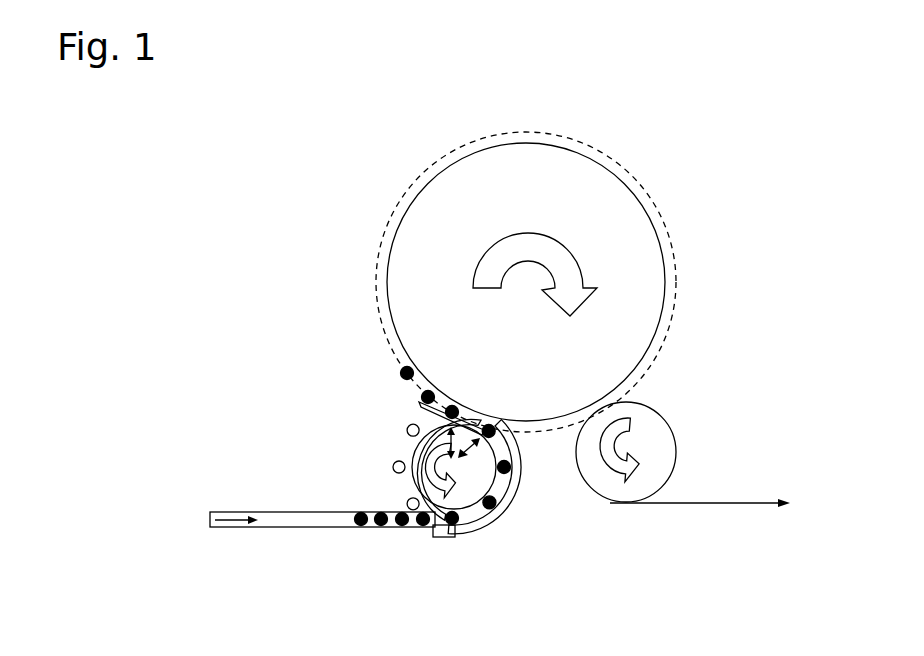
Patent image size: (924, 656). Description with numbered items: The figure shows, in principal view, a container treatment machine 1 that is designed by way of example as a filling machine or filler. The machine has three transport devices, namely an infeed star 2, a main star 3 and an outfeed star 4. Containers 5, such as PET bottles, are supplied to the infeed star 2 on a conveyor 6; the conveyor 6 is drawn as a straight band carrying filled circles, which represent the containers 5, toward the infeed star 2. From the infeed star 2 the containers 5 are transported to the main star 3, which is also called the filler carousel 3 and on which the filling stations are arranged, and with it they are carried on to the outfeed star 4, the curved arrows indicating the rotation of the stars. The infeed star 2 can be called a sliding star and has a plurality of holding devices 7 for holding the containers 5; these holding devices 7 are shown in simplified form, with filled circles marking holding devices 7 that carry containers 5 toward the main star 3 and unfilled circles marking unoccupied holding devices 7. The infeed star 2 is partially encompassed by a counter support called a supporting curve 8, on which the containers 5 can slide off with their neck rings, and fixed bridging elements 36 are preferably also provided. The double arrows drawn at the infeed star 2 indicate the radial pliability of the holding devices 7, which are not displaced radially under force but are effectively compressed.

The container treatment machine 1 is at (826, 87).
The infeed star 2 is at (430, 461).
The main star 3 is at (480, 175).
The outfeed star 4 is at (655, 422).
The containers 5 is at (362, 526).
The conveyor 6 is at (289, 526).
The holding devices 7 is at (407, 492).
The supporting curve 8 is at (493, 517).
The bridging elements 36 is at (420, 403).